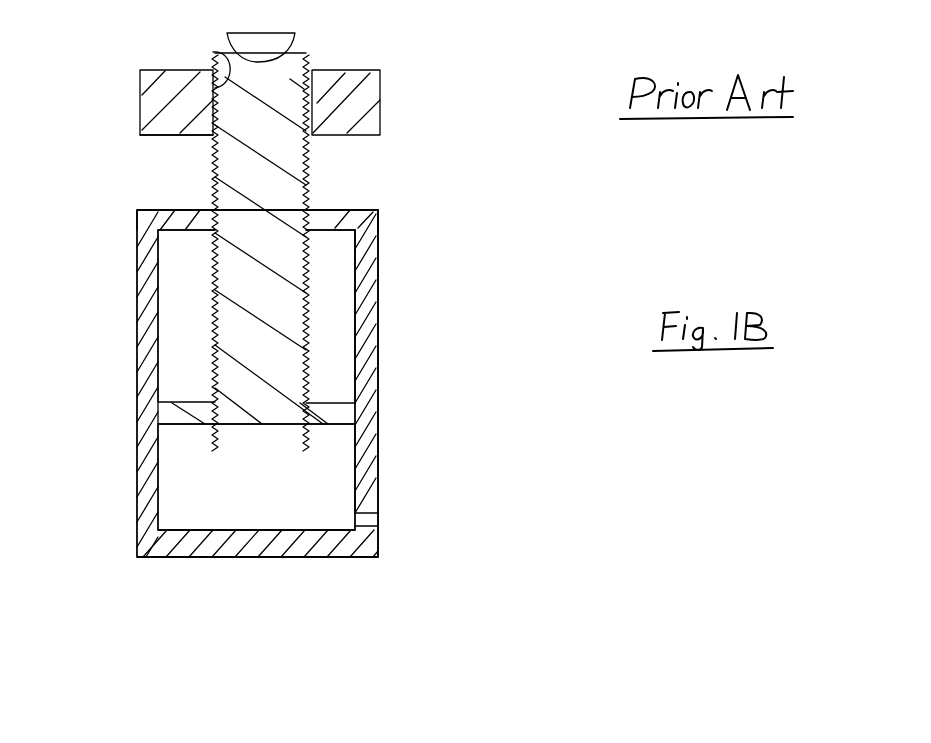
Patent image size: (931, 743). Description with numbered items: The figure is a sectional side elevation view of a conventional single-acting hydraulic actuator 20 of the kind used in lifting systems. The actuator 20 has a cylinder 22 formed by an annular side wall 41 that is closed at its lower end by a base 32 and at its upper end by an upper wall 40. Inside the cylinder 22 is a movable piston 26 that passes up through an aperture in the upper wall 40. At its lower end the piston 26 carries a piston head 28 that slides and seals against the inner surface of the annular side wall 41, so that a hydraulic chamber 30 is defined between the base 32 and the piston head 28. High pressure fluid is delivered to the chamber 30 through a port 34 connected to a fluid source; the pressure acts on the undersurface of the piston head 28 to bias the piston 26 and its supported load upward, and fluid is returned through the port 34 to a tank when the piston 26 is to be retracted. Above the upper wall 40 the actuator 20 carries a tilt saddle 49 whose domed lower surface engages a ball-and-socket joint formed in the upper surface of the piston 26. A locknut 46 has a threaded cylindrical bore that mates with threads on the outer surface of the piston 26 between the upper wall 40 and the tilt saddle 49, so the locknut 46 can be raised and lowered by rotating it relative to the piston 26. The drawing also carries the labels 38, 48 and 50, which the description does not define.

The hydraulic actuator 20 is at (410, 87).
The cylinder 22 is at (378, 338).
The piston 26 is at (305, 180).
The piston head 28 is at (328, 402).
The hydraulic chamber 30 is at (252, 486).
The base 32 is at (270, 557).
The port 34 is at (378, 517).
The bore 38 is at (343, 286).
The upper wall 40 is at (175, 210).
The annular side wall 41 is at (378, 446).
The locknut 46 is at (139, 97).
The washer 48 is at (213, 53).
The tilt saddle 49 is at (296, 41).
The gap 50 is at (213, 150).